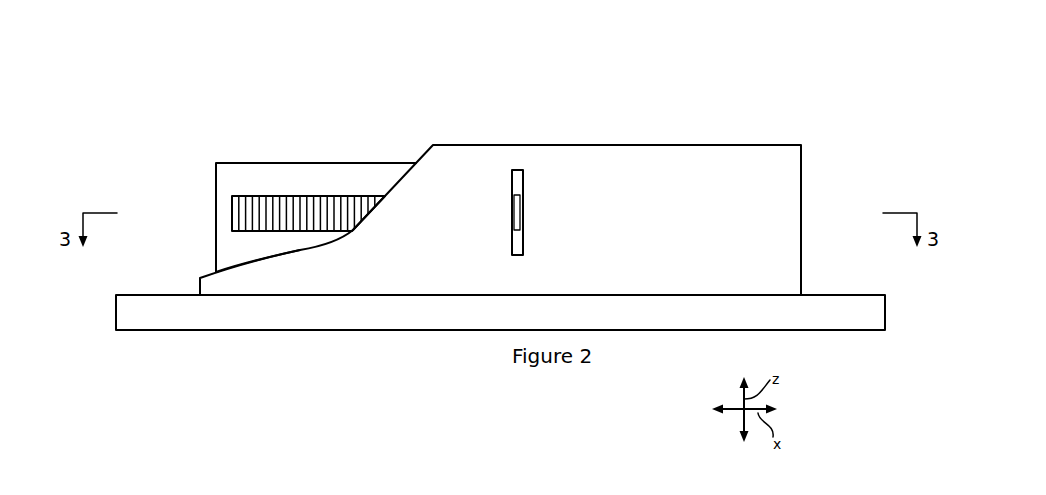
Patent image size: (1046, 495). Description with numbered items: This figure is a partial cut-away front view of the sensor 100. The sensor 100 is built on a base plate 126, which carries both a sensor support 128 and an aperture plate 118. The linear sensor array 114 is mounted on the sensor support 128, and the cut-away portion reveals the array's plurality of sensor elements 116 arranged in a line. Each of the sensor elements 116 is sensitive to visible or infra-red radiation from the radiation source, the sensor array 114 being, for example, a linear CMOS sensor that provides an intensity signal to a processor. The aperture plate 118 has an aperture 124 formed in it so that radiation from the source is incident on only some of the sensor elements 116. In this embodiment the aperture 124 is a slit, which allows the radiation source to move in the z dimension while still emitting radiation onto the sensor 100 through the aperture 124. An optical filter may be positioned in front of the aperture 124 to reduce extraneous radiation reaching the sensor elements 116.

The sensor 100 is at (836, 123).
The linear sensor array 114 is at (248, 193).
The sensor elements 116 is at (320, 200).
The aperture plate 118 is at (700, 195).
The aperture 124 is at (515, 172).
The base plate 126 is at (323, 312).
The sensor support 128 is at (282, 179).